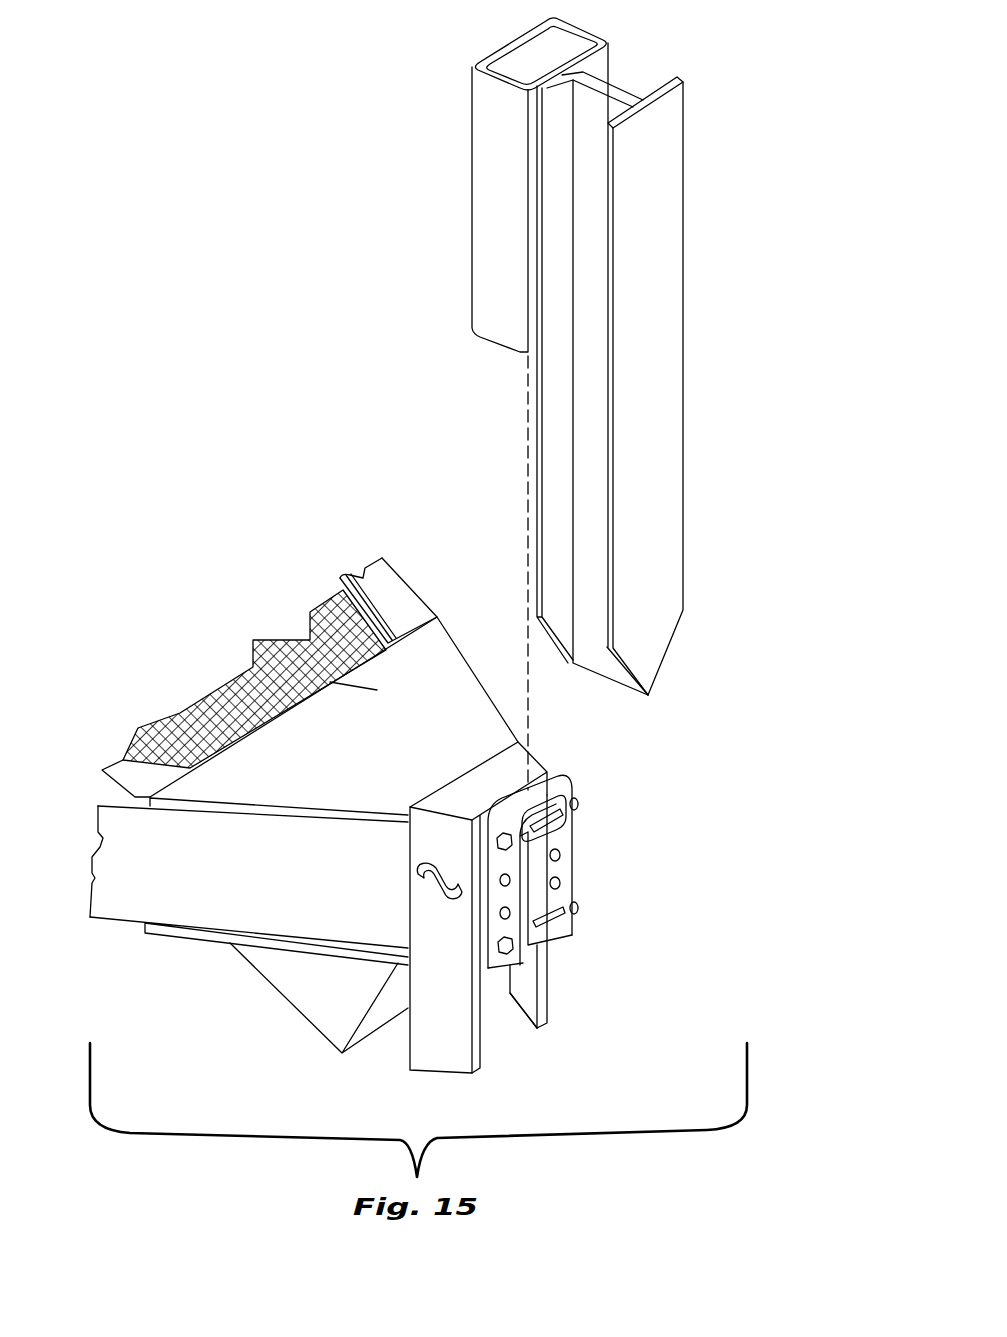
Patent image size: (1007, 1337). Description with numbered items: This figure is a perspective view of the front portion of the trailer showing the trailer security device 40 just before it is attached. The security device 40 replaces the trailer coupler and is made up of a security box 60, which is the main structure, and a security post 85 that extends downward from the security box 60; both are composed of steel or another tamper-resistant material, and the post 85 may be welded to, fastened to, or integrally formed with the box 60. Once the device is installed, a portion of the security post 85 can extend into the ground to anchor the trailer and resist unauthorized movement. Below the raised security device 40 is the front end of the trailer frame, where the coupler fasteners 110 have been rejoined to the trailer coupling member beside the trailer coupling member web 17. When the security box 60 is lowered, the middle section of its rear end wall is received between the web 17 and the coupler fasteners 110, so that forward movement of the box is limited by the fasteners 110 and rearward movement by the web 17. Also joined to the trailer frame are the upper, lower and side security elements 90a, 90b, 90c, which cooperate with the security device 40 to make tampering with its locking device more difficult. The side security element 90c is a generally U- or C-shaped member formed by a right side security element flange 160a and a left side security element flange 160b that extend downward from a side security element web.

The trailer security device 40 is at (718, 101).
The security box 60 is at (492, 192).
The security post 85 is at (653, 328).
The trailer coupling member web 17 is at (555, 790).
The coupler fasteners 110 is at (540, 833).
The upper security element 90a is at (250, 650).
The lower security element 90b is at (308, 987).
The side security element 90c is at (560, 977).
The right side security element flange 160a is at (468, 1047).
The left side security element flange 160b is at (547, 1005).